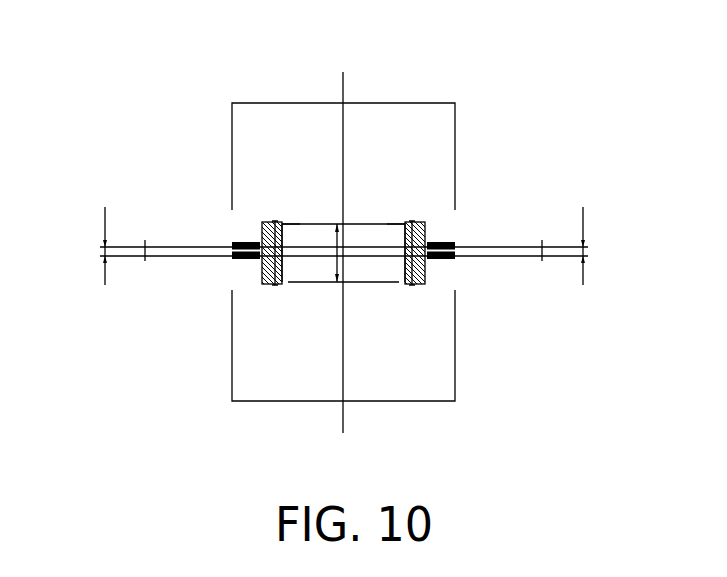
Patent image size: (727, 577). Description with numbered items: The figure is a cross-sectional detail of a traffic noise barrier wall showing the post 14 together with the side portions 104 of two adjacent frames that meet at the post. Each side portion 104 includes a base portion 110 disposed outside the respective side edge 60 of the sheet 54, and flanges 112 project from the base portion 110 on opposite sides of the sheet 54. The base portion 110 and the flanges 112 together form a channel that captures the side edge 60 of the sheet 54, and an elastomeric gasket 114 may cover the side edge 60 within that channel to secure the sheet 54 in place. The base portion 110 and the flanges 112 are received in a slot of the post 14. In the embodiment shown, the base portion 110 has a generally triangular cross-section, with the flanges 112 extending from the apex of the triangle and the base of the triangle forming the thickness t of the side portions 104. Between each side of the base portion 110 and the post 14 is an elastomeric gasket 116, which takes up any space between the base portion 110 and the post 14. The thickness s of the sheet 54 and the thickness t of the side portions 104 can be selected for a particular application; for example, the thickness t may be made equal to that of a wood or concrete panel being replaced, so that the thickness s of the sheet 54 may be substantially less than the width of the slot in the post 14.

The post 14 is at (405, 64).
The sheet 54 is at (145, 261).
The side edge 60 is at (284, 284).
The side portion 104 is at (234, 219).
The base portion 110 is at (292, 226).
The flange 112 is at (258, 244).
The elastomeric gasket 114 is at (232, 259).
The elastomeric gasket 116 is at (272, 223).
The thickness of the sheet s is at (104, 210).
The thickness of the side portions t is at (335, 250).